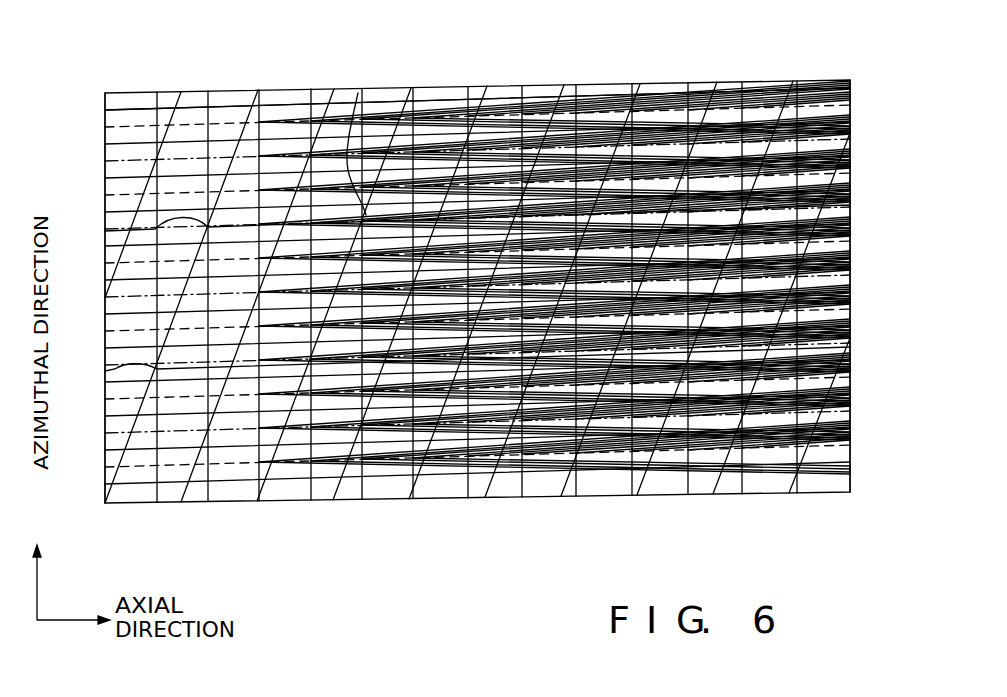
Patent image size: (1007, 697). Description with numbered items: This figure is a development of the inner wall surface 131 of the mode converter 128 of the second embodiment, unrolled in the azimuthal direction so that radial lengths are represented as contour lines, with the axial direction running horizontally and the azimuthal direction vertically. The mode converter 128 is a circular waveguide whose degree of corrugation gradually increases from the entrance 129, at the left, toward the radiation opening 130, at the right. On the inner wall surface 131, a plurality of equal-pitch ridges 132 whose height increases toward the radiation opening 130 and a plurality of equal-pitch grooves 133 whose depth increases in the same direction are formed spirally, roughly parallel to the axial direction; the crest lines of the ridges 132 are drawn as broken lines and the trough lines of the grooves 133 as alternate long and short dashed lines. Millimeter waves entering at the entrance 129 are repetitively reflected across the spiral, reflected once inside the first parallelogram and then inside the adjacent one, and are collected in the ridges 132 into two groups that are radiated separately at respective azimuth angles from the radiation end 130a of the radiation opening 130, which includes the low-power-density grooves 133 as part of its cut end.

The mode converter 128 is at (544, 76).
The entrance 129 is at (105, 100).
The radiation opening 130 is at (772, 82).
The radiation end 130a is at (778, 492).
The inner wall surface 131 is at (469, 504).
The ridges 132 is at (107, 333).
The grooves 133 is at (850, 314).